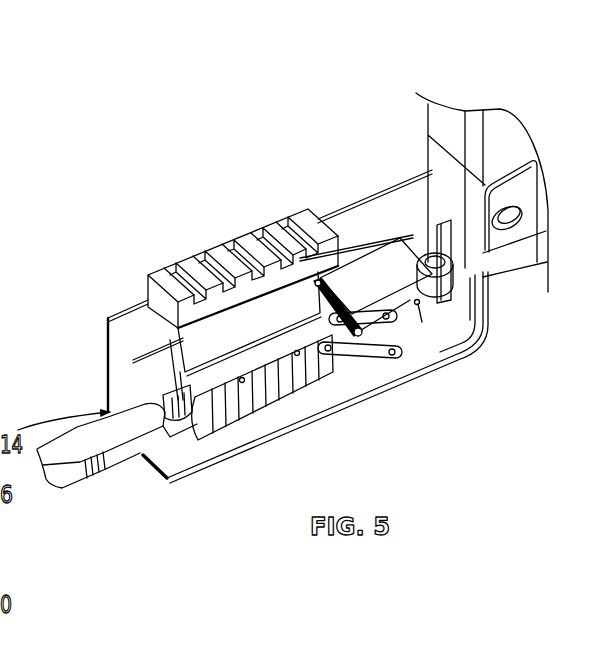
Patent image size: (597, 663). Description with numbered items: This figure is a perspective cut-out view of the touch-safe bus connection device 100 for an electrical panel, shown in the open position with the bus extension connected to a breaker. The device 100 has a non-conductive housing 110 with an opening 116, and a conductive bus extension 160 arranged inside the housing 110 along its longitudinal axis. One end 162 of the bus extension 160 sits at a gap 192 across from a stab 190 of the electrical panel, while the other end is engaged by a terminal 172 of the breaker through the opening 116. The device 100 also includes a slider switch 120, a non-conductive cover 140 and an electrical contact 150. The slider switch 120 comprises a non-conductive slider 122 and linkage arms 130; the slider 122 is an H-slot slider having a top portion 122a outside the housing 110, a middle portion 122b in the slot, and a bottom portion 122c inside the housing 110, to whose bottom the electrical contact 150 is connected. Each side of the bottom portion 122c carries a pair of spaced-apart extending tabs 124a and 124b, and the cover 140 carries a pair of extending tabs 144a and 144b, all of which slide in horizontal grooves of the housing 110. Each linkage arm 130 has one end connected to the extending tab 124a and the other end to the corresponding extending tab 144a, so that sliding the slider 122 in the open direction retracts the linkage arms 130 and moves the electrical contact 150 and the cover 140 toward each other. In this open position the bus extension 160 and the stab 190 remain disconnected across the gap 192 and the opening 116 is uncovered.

The touch-safe bus connection device 100 is at (119, 96).
The non-conductive housing 110 is at (388, 180).
The opening 116 is at (459, 242).
The slider switch 120 is at (262, 220).
The non-conductive slider 122 is at (152, 268).
The top portion 122a is at (221, 268).
The middle portion 122b is at (178, 358).
The bottom portion 122c is at (160, 402).
The extending tab 124a is at (343, 357).
The extending tab 124b is at (243, 384).
The linkage arm 130 is at (405, 362).
The non-conductive cover 140 is at (365, 272).
The extending tab 144a is at (413, 330).
The extending tab 144b is at (408, 323).
The electrical contact 150 is at (305, 397).
The conductive bus extension 160 is at (457, 353).
The end 162 is at (180, 425).
The terminal 172 is at (478, 309).
The stab 190 is at (120, 465).
The gap 192 is at (185, 441).